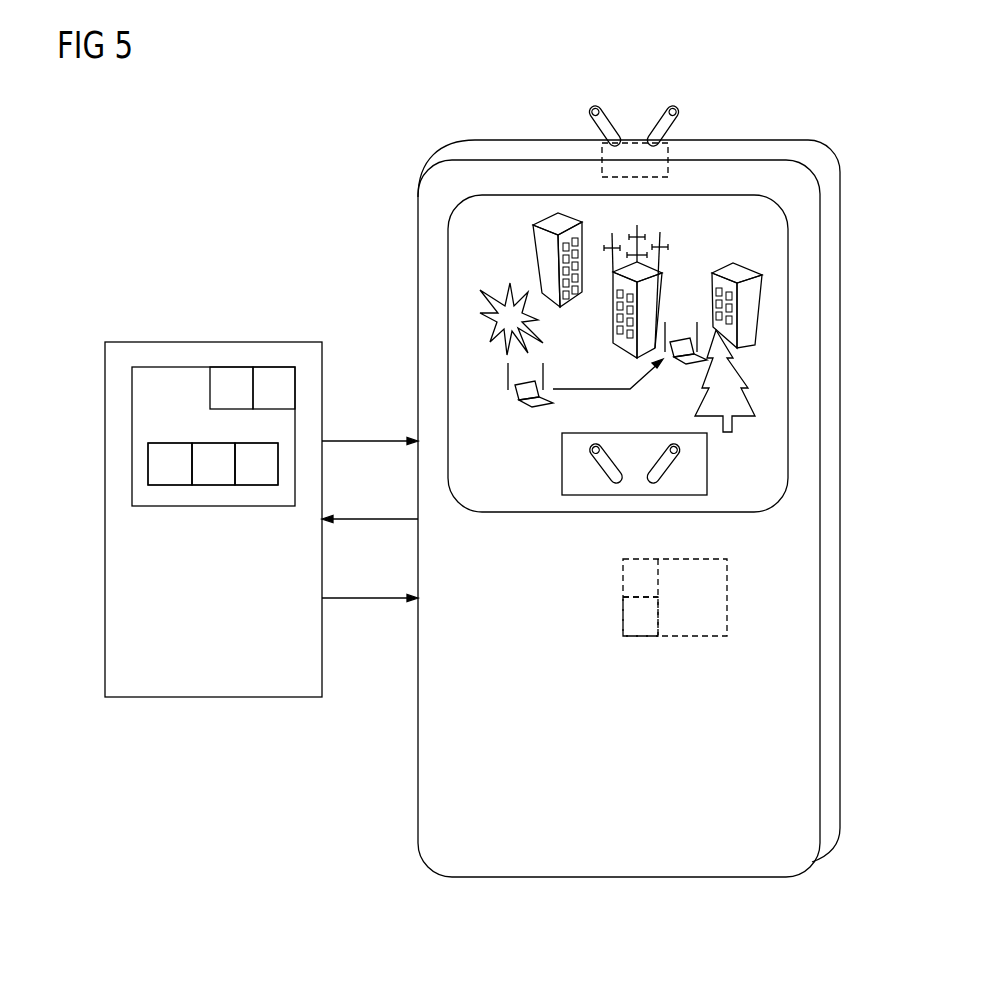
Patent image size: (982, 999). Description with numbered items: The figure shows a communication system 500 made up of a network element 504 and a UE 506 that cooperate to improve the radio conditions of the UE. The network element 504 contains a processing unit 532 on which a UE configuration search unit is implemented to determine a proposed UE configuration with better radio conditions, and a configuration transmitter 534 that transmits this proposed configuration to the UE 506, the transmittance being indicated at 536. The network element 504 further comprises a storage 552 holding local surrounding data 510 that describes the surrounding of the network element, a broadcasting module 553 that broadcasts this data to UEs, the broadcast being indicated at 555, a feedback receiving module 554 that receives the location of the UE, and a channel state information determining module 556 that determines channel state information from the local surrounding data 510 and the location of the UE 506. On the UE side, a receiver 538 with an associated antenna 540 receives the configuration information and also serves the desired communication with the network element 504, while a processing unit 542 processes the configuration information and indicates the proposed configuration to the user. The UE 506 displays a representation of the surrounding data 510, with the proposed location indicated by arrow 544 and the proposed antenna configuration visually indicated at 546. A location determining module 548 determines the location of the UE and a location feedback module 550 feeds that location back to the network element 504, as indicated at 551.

The communication system 500 is at (786, 90).
The network element 504 is at (213, 698).
The UE 506 is at (618, 878).
The local surrounding data 510 is at (692, 257).
The processing unit 532 is at (158, 507).
The configuration transmitter 534 is at (272, 378).
The transmittance of the proposed UE configuration 536 is at (357, 600).
The receiver 538 is at (668, 168).
The antenna 540 is at (662, 119).
The processing unit 542 is at (727, 604).
The arrow 544 is at (603, 389).
The proposed antenna configuration 546 is at (562, 463).
The location determining module 548 is at (627, 577).
The location feedback module 550 is at (627, 617).
The location feedback 551 is at (378, 518).
The storage 552 is at (172, 452).
The broadcasting module 553 is at (232, 378).
The feedback receiving module 554 is at (256, 477).
The broadcasting 555 is at (362, 440).
The channel state information determining module 556 is at (212, 477).